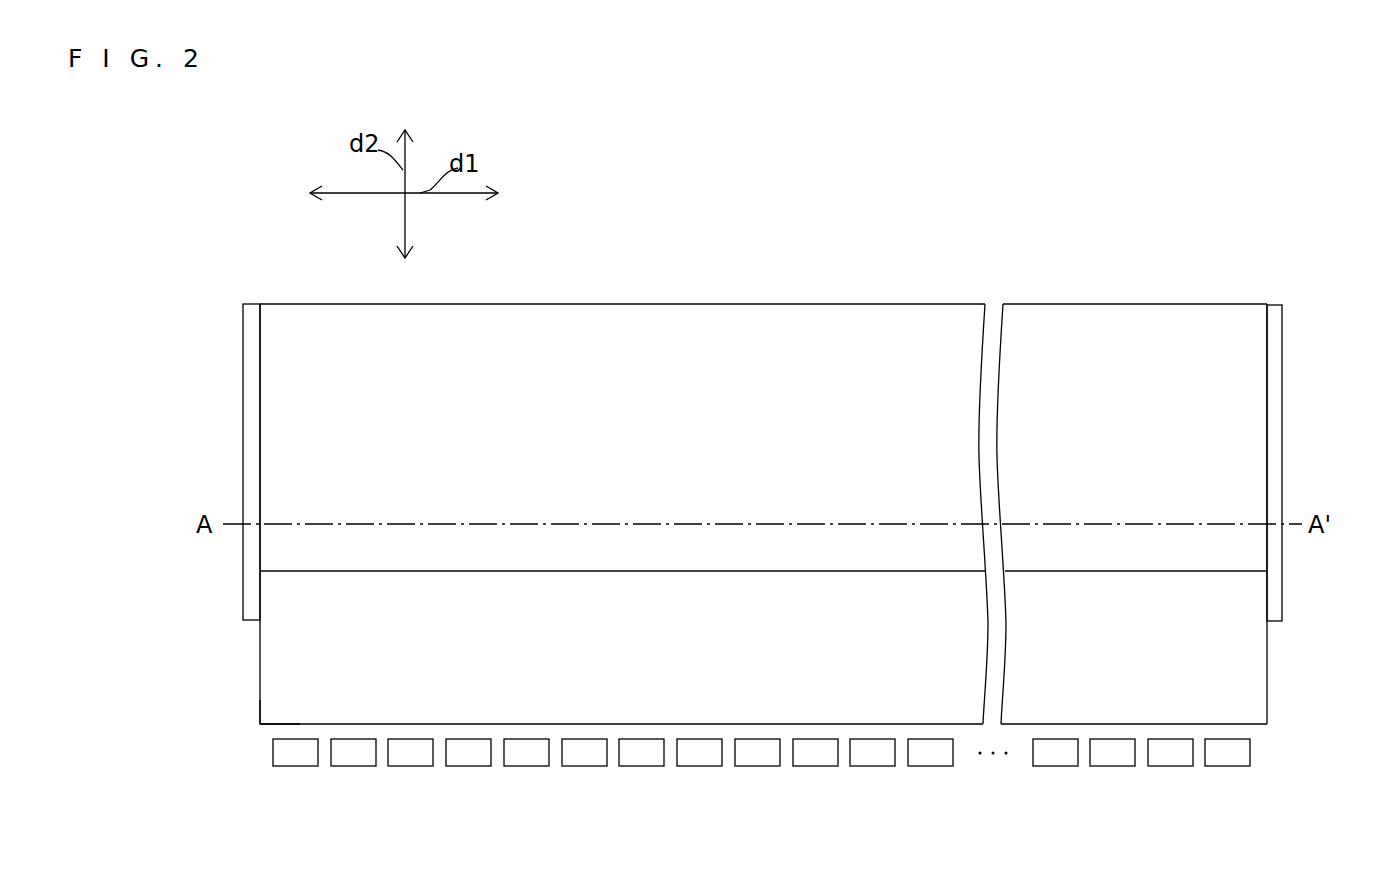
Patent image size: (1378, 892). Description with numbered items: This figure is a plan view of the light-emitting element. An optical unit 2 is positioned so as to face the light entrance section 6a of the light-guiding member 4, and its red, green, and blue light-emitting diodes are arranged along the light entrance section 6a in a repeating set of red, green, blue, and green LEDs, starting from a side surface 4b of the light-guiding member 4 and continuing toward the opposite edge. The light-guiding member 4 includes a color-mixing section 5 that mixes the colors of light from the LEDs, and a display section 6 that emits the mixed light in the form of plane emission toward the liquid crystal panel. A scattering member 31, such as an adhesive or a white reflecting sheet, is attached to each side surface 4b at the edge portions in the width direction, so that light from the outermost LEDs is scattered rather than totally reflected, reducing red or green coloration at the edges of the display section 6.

The optical unit 2 is at (365, 818).
The light-guiding member 4 is at (860, 288).
The side surface 4b is at (258, 397).
The color-mixing section 5 is at (1237, 647).
The display section 6 is at (1237, 468).
The light entrance section 6a is at (271, 724).
The scattering member 31 is at (252, 322).